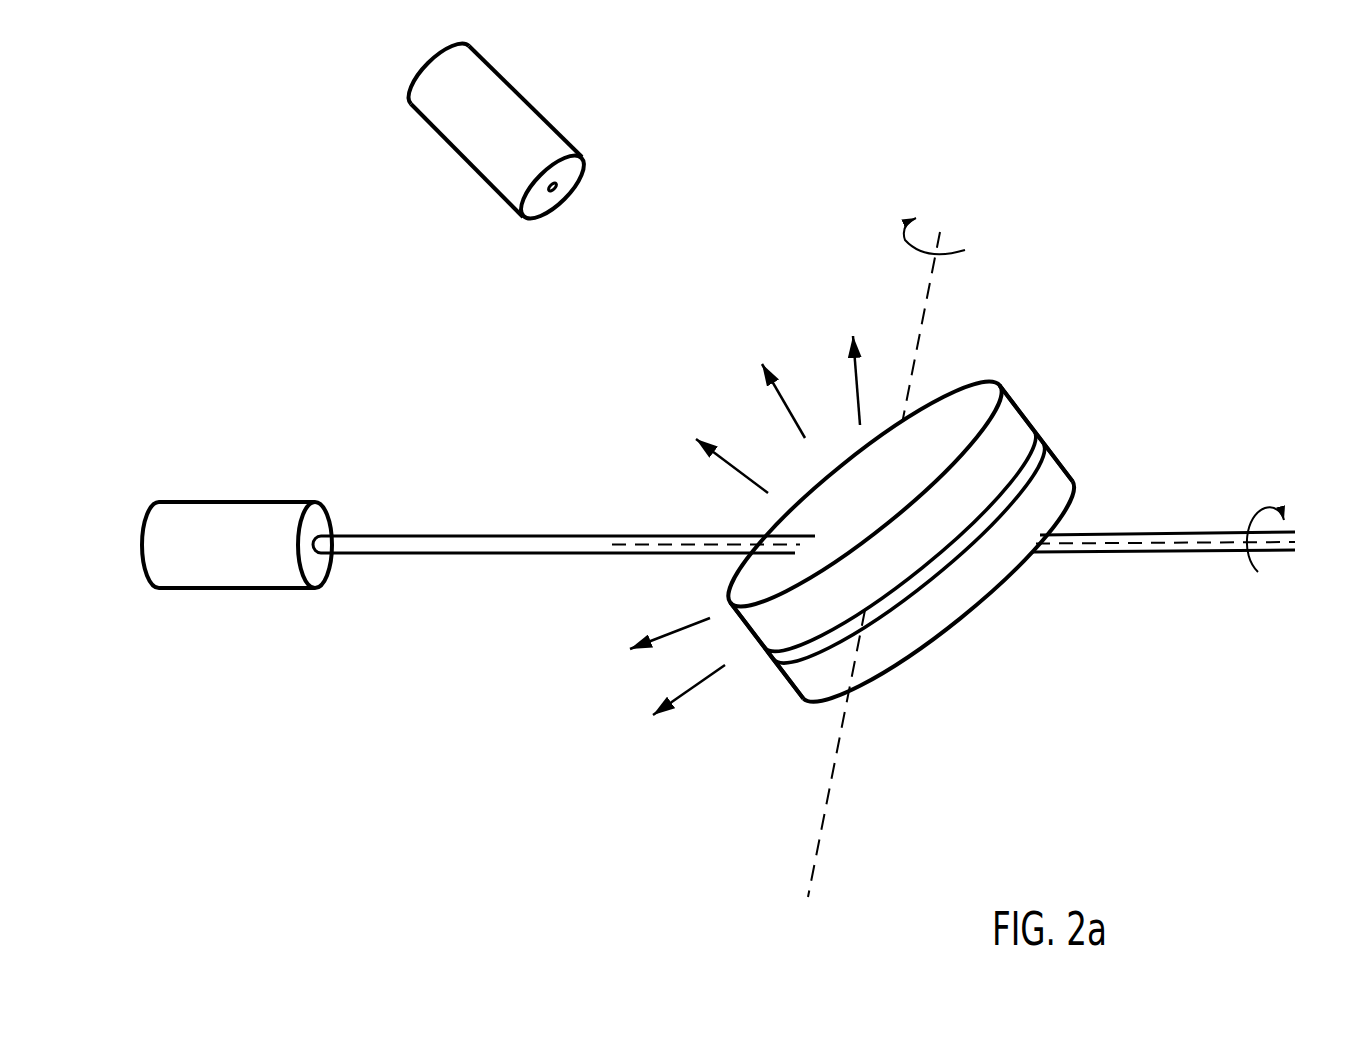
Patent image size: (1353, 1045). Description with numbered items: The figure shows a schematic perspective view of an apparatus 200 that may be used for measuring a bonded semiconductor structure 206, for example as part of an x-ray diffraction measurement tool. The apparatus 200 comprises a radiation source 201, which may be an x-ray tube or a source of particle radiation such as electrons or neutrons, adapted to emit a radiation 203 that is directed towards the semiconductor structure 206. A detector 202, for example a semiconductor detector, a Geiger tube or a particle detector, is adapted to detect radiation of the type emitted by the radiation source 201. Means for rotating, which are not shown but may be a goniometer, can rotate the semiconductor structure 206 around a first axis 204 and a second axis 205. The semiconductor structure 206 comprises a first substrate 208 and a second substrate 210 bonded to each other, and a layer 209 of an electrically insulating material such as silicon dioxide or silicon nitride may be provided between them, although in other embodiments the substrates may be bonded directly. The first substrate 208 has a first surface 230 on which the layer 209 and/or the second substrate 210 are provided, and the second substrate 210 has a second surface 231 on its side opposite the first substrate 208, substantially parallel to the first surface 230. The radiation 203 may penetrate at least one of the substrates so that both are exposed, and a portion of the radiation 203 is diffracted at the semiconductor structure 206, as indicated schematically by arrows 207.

The apparatus 200 is at (1272, 194).
The radiation source 201 is at (206, 500).
The detector 202 is at (491, 190).
The radiation 203 is at (463, 536).
The first axis 204 is at (1211, 547).
The second axis 205 is at (940, 237).
The semiconductor structure 206 is at (1132, 360).
The arrows 207 is at (716, 389).
The first substrate 208 is at (1064, 462).
The layer of electrically insulating material 209 is at (1044, 432).
The second substrate 210 is at (1020, 404).
The first surface 230 is at (1048, 439).
The second surface 231 is at (1007, 388).